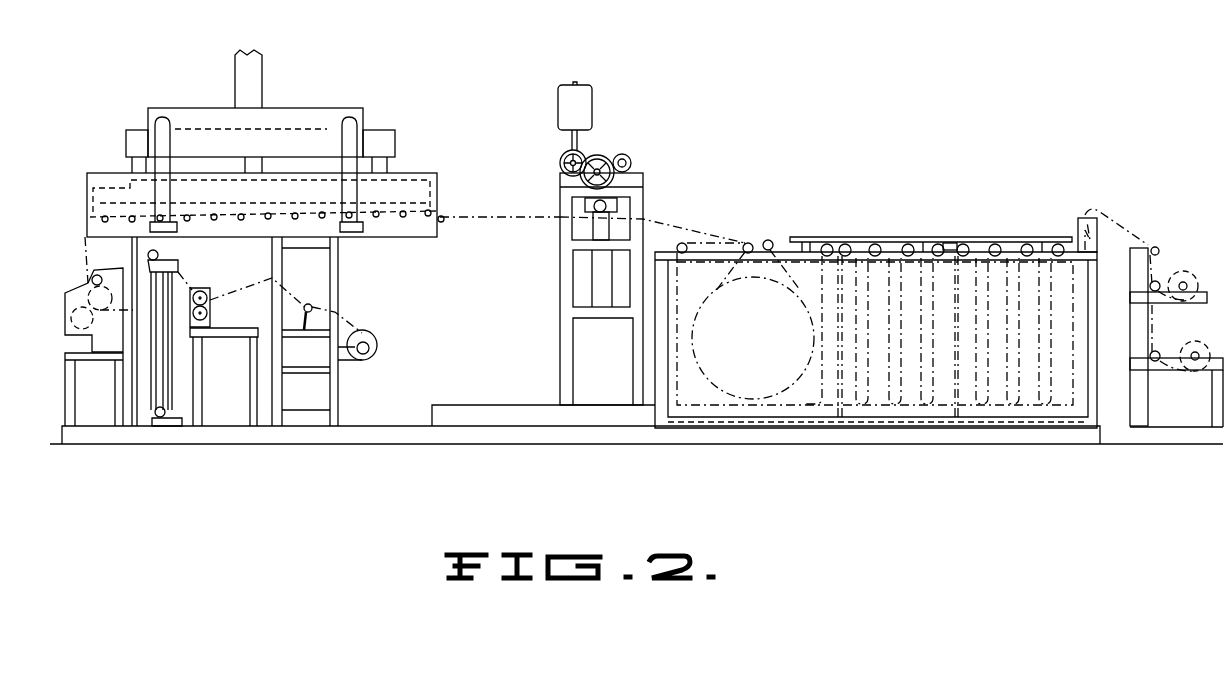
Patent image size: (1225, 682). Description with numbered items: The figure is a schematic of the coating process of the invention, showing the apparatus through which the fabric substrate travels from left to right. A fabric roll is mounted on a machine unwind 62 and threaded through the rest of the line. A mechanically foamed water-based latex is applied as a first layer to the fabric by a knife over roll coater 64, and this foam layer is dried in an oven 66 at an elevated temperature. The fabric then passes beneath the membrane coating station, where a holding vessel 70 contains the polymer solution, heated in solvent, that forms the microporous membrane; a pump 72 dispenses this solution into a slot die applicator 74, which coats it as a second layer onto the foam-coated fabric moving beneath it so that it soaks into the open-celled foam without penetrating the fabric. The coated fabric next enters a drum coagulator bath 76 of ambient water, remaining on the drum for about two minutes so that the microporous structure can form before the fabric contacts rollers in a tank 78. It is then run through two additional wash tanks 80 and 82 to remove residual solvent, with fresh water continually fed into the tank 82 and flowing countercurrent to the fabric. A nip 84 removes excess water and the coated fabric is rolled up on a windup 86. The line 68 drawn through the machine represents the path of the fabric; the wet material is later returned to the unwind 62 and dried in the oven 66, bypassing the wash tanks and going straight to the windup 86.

The machine unwind 62 is at (378, 343).
The knife over roll coater 64 is at (85, 283).
The oven 66 is at (110, 172).
The fishing line 68 is at (450, 216).
The holding vessel 70 is at (593, 100).
The pump 72 is at (595, 154).
The slot die applicator 74 is at (612, 206).
The drum coagulator bath 76 is at (764, 282).
The tank 78 is at (749, 242).
The wash tank 80 is at (888, 270).
The wash tank 82 is at (1012, 275).
The nip 84 is at (1096, 222).
The windup 86 is at (1185, 280).